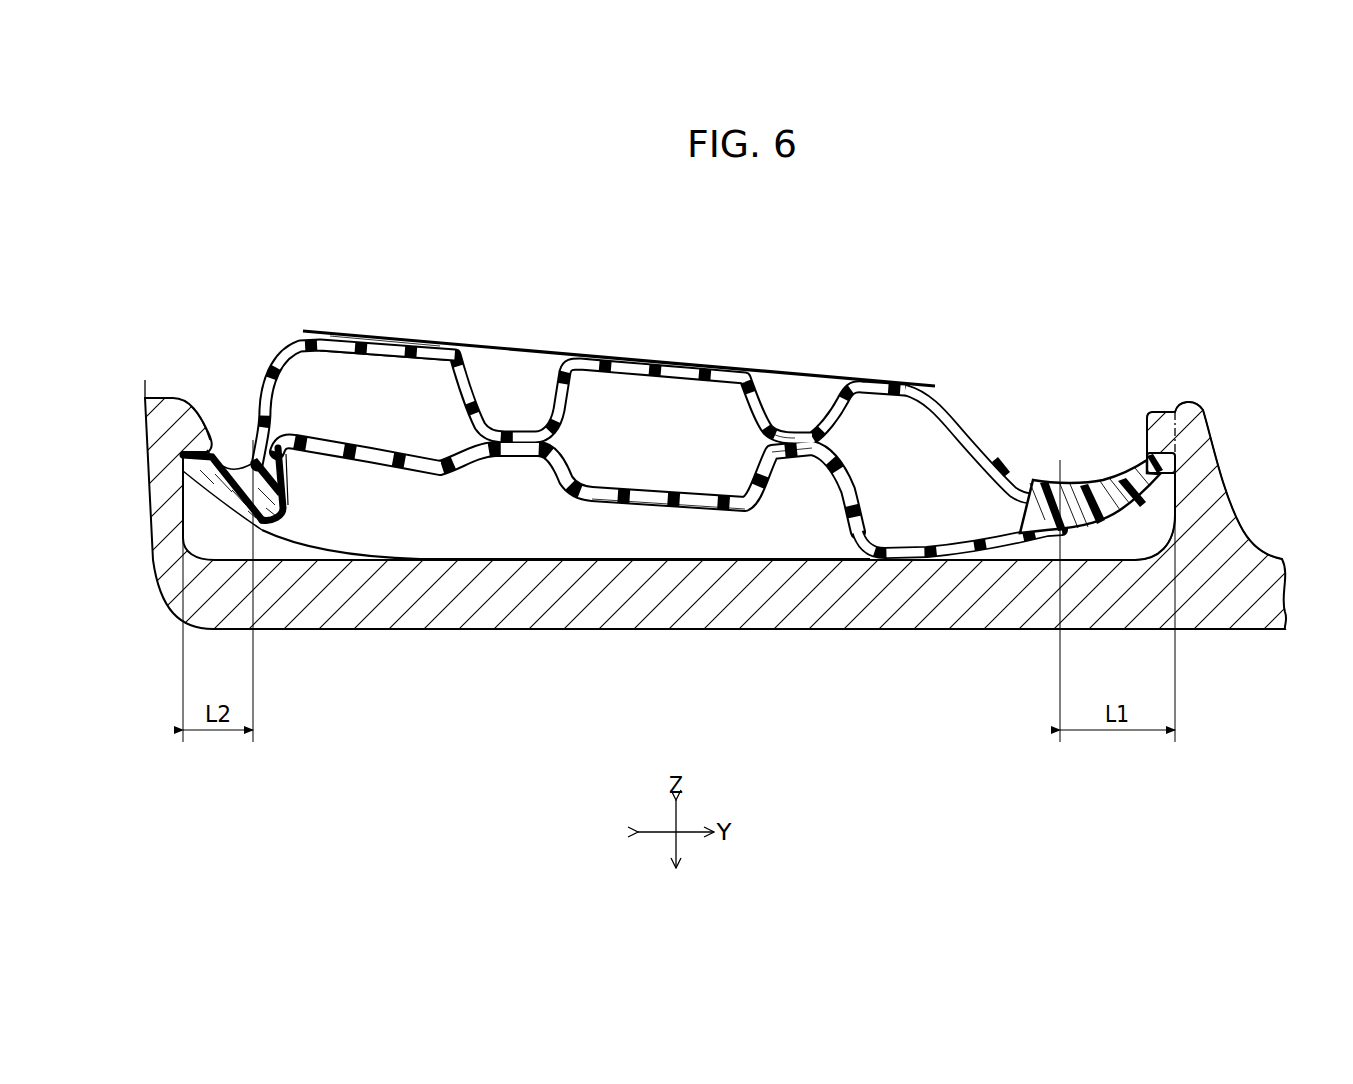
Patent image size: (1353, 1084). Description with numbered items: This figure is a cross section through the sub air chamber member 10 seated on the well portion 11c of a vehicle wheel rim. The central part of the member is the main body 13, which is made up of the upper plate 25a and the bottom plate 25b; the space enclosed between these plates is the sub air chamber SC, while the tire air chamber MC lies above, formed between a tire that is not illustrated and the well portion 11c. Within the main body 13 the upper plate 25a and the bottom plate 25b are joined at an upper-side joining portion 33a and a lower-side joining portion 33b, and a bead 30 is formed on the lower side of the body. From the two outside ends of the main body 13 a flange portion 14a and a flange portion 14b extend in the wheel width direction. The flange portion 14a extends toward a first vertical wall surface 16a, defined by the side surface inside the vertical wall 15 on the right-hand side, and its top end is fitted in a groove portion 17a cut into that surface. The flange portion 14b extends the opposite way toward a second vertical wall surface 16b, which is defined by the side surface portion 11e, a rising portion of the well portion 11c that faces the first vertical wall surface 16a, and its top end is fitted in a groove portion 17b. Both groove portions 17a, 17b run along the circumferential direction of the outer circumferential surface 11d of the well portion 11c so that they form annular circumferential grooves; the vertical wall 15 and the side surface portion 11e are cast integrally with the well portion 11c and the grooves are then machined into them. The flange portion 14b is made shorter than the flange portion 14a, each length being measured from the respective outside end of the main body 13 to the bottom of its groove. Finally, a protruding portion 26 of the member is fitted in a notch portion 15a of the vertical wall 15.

The sub air chamber member 10 is at (673, 440).
The well portion 11c is at (1033, 560).
The outer circumferential surface 11d is at (315, 560).
The side surface portion 11e is at (160, 398).
The main body 13 is at (368, 263).
The flange portion 14a is at (1067, 496).
The flange portion 14b is at (232, 455).
The vertical wall 15 is at (1220, 505).
The notch portion 15a is at (1180, 488).
The first vertical wall surface 16a is at (1165, 507).
The second vertical wall surface 16b is at (190, 500).
The groove portion 17a is at (1195, 455).
The groove portion 17b is at (215, 448).
The upper plate 25a is at (508, 344).
The bottom plate 25b is at (345, 437).
The protruding portion 26 is at (1160, 412).
The bead 30 is at (625, 525).
The upper-side joining portion 33a is at (797, 407).
The lower-side joining portion 33b is at (803, 490).
The sub air chamber SC is at (335, 362).
The tire air chamber MC is at (631, 221).